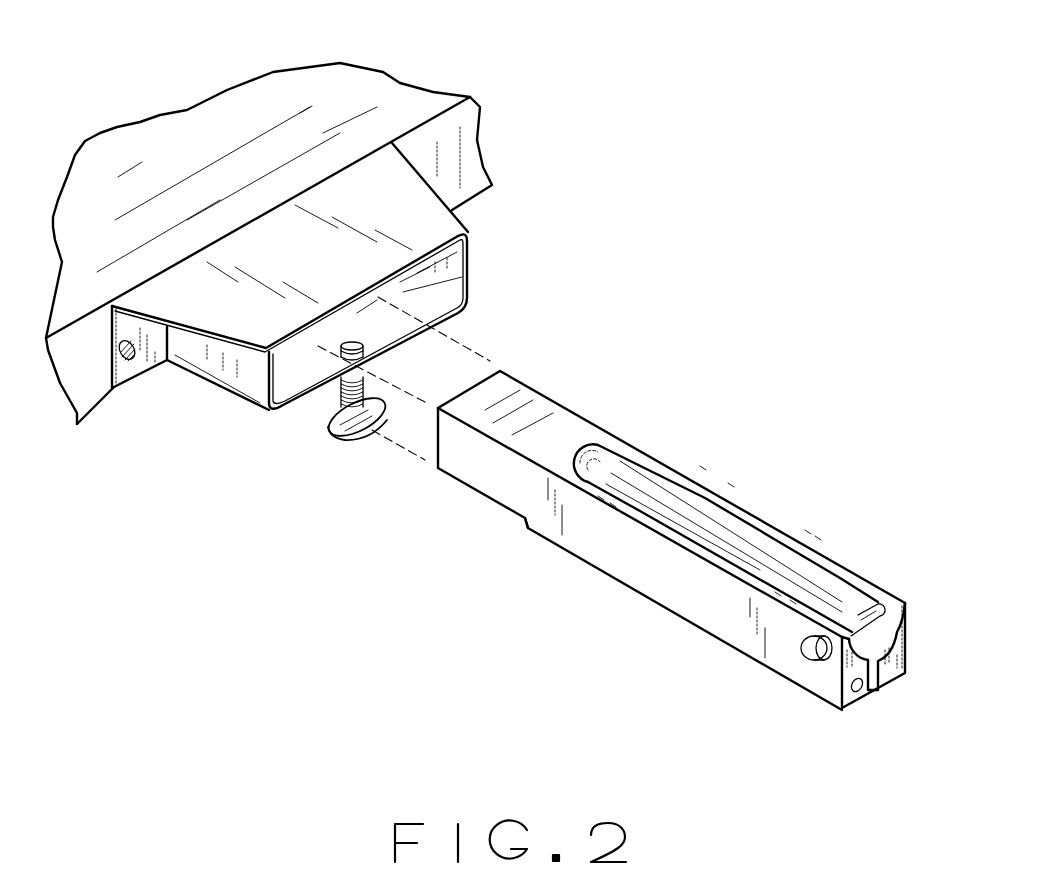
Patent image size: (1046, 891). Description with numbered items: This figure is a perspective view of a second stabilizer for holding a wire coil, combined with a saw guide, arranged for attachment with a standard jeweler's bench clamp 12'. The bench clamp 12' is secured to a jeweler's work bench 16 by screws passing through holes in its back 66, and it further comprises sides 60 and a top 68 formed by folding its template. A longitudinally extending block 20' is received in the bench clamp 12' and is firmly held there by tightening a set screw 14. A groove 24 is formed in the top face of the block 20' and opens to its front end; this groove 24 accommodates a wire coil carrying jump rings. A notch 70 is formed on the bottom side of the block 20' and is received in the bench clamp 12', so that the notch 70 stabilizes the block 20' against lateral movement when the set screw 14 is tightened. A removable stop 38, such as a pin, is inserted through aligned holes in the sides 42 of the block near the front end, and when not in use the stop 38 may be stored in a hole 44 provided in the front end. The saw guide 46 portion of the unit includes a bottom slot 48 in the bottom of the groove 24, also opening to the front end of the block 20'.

The jeweler's work bench 16 is at (400, 83).
The top 68 is at (437, 190).
The standard jeweler's bench clamp 12' is at (335, 322).
The back 66 is at (153, 368).
The sides 60 is at (243, 374).
The set screw 14 is at (355, 440).
The block 20' is at (699, 556).
The groove 24 is at (673, 500).
The notch 70 is at (478, 492).
The sides 42 is at (755, 527).
The removable stop 38 is at (807, 648).
The hole 44 is at (858, 690).
The saw guide 46 is at (897, 667).
The bottom slot 48 is at (873, 690).